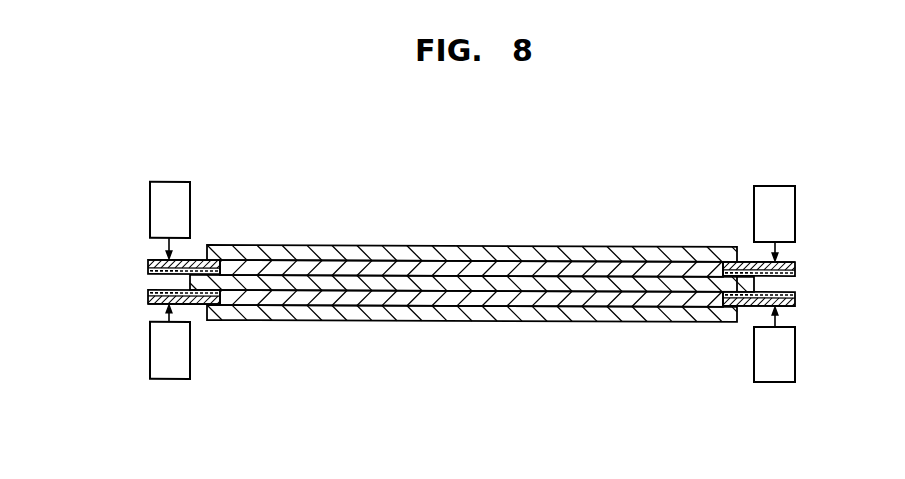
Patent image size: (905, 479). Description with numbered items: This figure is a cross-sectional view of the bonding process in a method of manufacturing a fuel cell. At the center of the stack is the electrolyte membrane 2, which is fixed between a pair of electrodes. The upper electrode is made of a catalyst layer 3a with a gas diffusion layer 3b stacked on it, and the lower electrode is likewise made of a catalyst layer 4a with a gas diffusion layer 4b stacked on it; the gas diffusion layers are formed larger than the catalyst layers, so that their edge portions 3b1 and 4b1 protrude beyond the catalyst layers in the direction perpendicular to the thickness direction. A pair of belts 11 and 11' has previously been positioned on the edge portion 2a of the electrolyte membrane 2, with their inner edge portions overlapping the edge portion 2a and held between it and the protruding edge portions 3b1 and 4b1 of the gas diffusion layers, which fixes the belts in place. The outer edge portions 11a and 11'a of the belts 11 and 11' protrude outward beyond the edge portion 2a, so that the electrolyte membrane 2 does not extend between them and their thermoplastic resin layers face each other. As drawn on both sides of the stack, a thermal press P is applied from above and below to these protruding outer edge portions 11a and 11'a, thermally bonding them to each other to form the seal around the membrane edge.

The electrolyte membrane 2 is at (197, 274).
The edge portion of the electrolyte membrane 2a is at (747, 260).
The catalyst layer 3a is at (453, 268).
The gas diffusion layer 3b is at (494, 252).
The edge portion of the gas diffusion layer 3b1 is at (205, 248).
The catalyst layer 4a is at (453, 293).
The gas diffusion layer 4b is at (499, 313).
The edge portion of the gas diffusion layer 4b1 is at (212, 320).
The belt 11 is at (470, 260).
The outer edge portion of the belt 11a is at (152, 259).
The belt 11' is at (469, 303).
The outer edge portion of the belt 11'a is at (472, 336).
The thermal press P is at (169, 182).